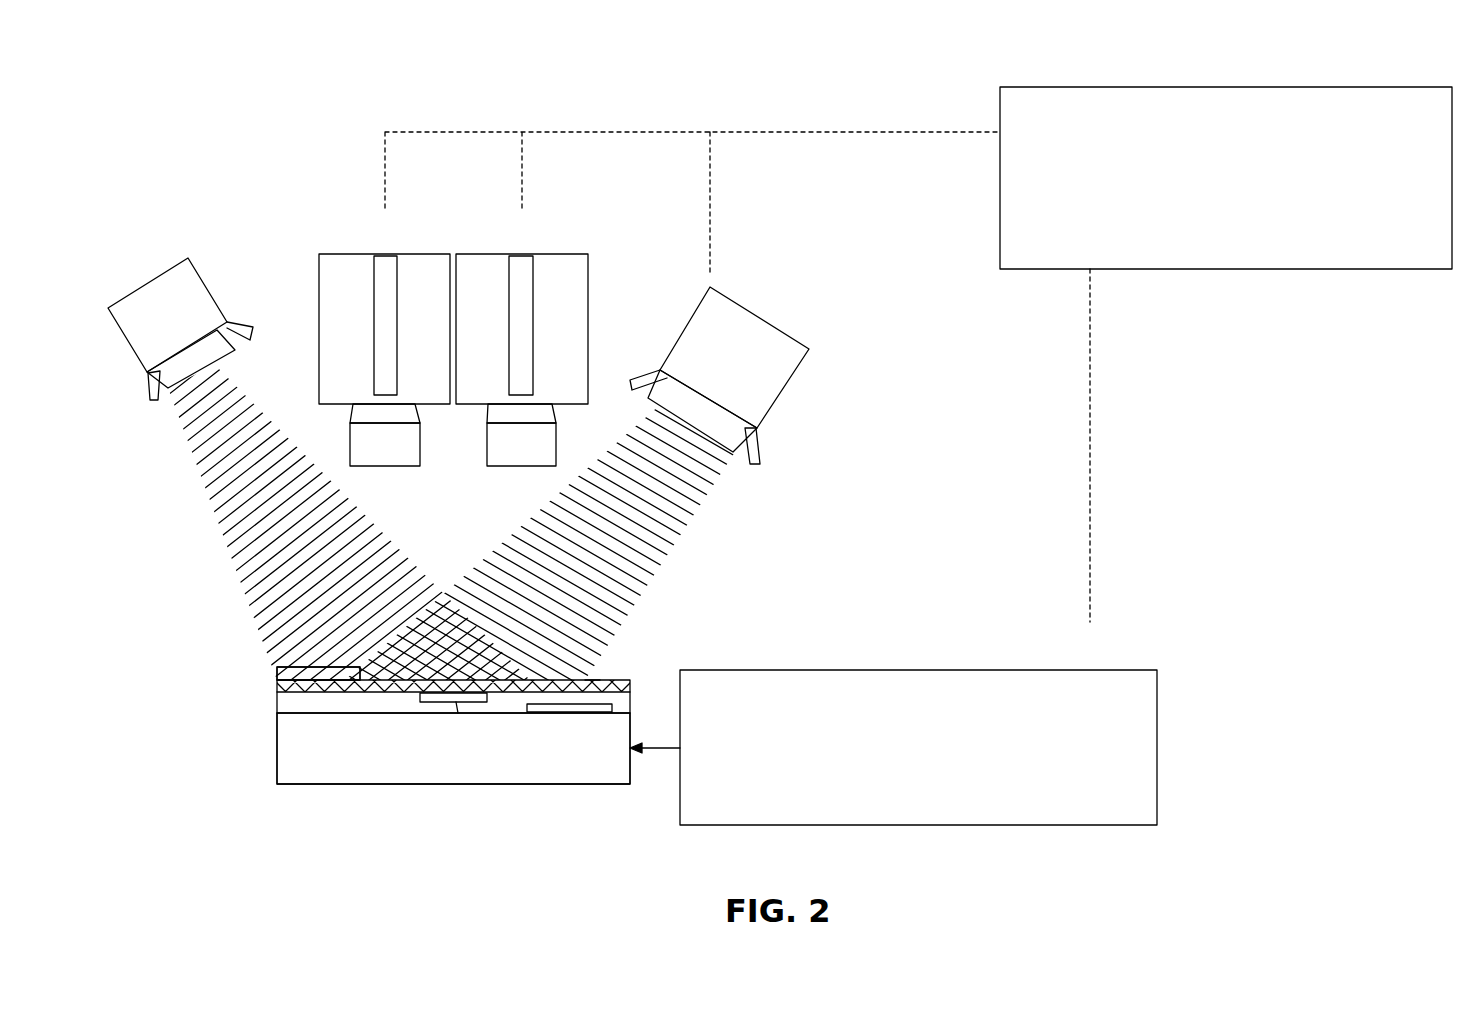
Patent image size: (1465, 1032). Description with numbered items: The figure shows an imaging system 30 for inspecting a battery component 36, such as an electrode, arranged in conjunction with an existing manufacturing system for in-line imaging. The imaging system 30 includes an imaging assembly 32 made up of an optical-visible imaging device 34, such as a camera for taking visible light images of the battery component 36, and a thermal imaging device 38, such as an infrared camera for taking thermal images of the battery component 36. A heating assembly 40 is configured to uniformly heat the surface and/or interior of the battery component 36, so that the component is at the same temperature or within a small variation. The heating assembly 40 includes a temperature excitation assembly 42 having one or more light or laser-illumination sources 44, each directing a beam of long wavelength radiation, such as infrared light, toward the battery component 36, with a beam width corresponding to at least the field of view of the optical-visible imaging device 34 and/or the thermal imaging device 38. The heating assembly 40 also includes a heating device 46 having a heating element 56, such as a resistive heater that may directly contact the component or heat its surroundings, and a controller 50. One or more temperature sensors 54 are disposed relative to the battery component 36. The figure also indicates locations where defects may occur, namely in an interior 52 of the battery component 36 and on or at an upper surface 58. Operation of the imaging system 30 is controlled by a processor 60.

The imaging system 30 is at (145, 57).
The imaging assembly 32 is at (322, 185).
The optical-visible imaging device 34 is at (337, 283).
The battery component 36 is at (277, 687).
The thermal imaging device 38 is at (570, 283).
The heating assembly 40 is at (834, 530).
The temperature excitation assembly 42 is at (184, 468).
The light or laser-illumination source 44 is at (158, 288).
The heating device 46 is at (277, 750).
The controller 50 is at (1158, 742).
The interior 52 is at (297, 667).
The temperature sensor 54 is at (330, 680).
The heating element 56 is at (440, 695).
The upper surface 58 is at (583, 677).
The processor 60 is at (1226, 257).